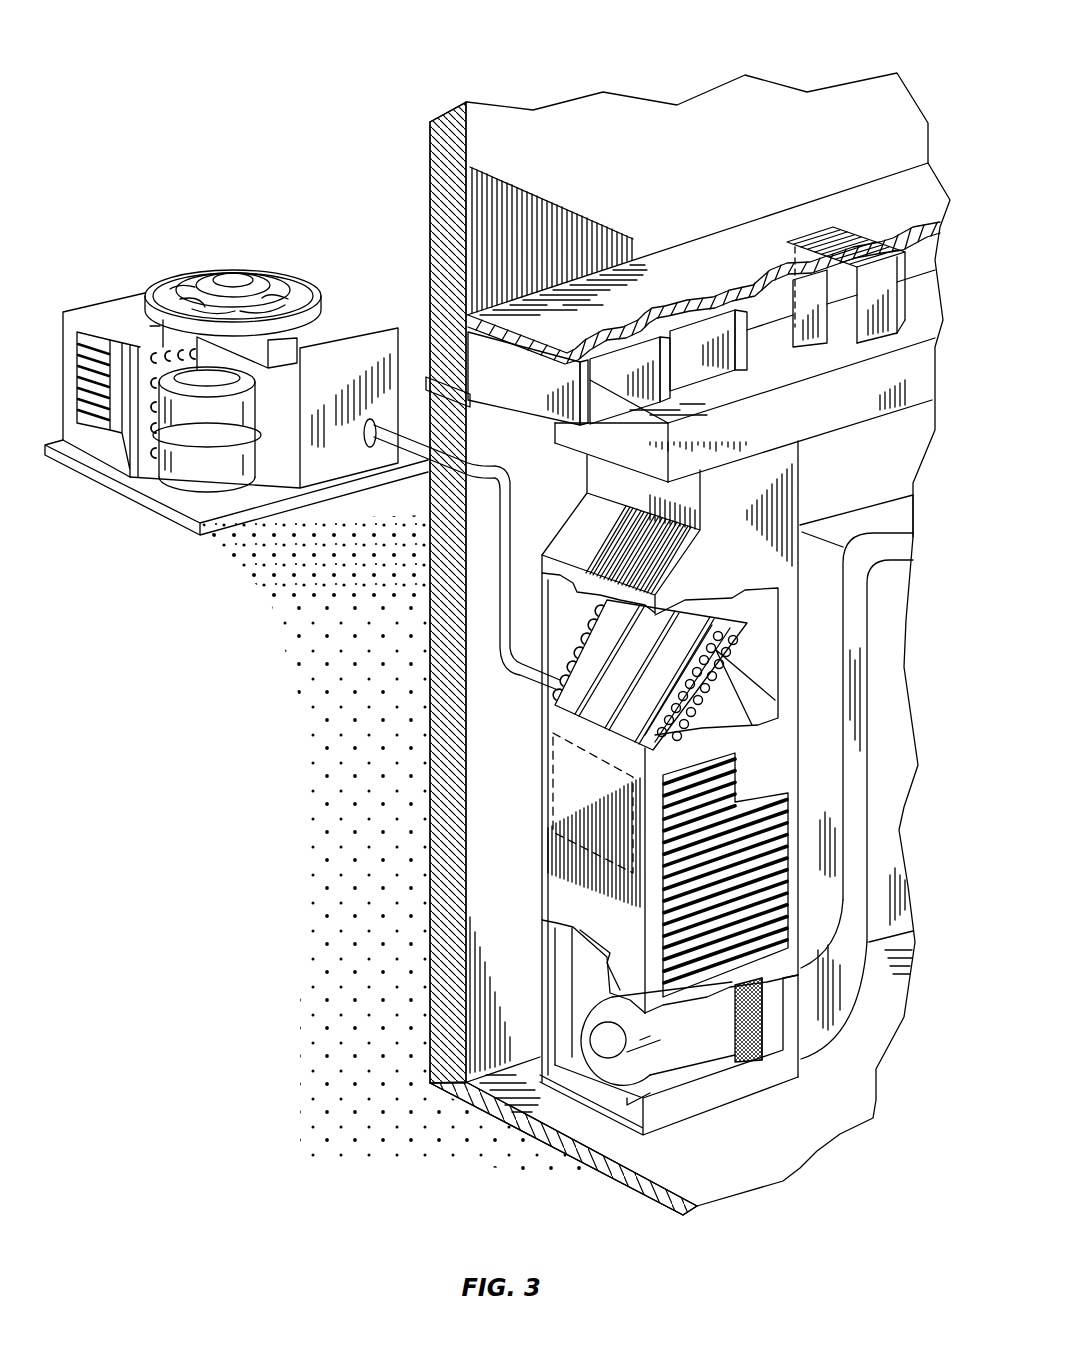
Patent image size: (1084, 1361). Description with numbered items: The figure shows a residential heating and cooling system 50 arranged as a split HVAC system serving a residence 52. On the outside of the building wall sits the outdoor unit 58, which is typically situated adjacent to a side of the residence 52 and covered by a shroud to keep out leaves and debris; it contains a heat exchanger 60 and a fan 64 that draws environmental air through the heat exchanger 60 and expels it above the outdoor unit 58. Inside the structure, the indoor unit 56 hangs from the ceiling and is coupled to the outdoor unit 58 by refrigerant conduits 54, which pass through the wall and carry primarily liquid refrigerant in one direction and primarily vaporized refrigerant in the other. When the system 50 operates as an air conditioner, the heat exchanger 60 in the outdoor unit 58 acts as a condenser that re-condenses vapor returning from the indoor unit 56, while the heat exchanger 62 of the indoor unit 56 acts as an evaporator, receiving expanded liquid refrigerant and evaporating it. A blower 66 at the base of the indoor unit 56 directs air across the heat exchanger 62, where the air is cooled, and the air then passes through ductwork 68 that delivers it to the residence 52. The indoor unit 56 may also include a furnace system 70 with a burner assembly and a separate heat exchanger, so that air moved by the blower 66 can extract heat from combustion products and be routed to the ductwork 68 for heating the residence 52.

The residential heating and cooling system 50 is at (349, 45).
The residence 52 is at (593, 112).
The refrigerant conduits 54 is at (503, 530).
The indoor unit 56 is at (532, 835).
The outdoor unit 58 is at (176, 256).
The heat exchanger 60 is at (153, 355).
The heat exchanger 62 is at (613, 702).
The fan 64 is at (257, 282).
The blower 66 is at (598, 1062).
The ductwork 68 is at (878, 307).
The furnace system 70 is at (548, 788).